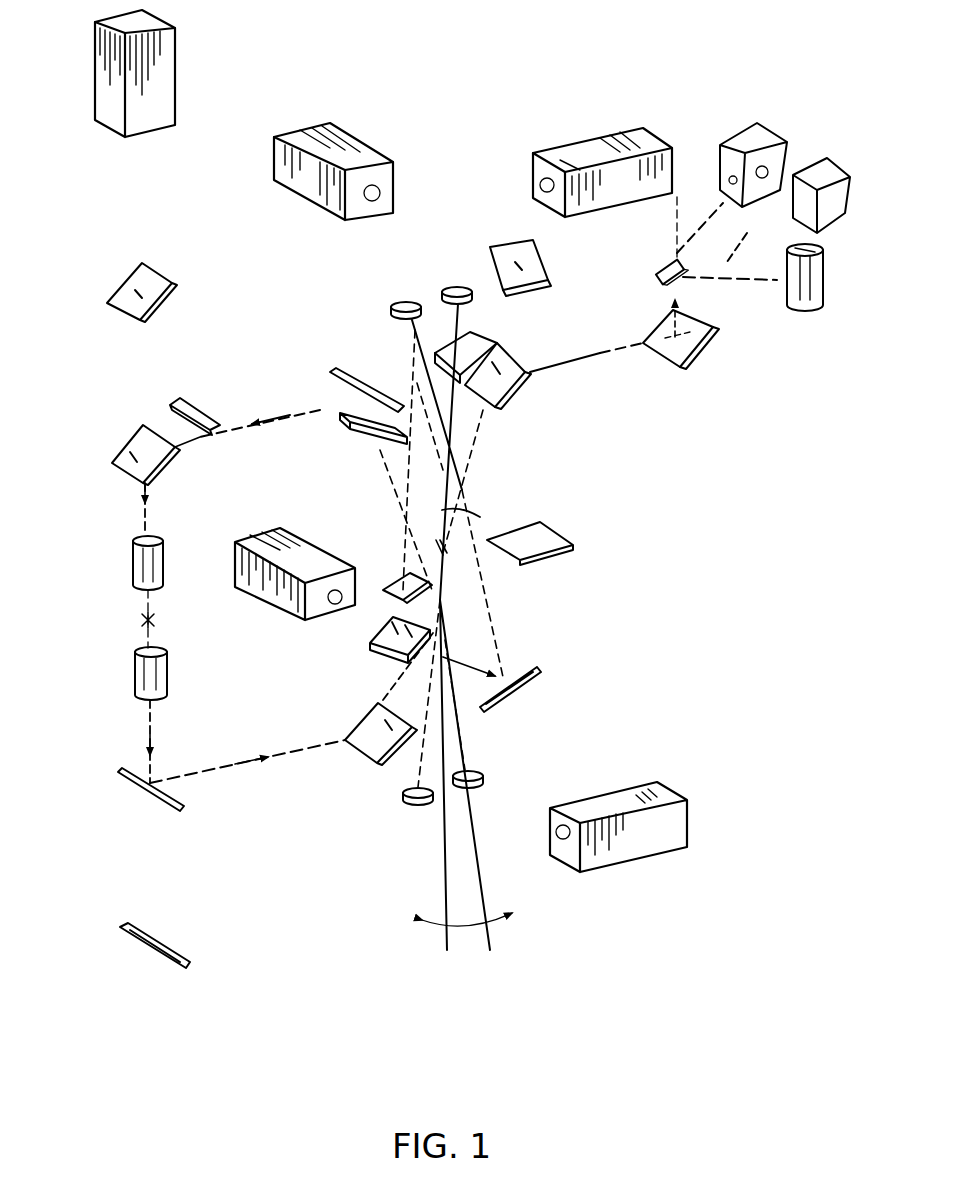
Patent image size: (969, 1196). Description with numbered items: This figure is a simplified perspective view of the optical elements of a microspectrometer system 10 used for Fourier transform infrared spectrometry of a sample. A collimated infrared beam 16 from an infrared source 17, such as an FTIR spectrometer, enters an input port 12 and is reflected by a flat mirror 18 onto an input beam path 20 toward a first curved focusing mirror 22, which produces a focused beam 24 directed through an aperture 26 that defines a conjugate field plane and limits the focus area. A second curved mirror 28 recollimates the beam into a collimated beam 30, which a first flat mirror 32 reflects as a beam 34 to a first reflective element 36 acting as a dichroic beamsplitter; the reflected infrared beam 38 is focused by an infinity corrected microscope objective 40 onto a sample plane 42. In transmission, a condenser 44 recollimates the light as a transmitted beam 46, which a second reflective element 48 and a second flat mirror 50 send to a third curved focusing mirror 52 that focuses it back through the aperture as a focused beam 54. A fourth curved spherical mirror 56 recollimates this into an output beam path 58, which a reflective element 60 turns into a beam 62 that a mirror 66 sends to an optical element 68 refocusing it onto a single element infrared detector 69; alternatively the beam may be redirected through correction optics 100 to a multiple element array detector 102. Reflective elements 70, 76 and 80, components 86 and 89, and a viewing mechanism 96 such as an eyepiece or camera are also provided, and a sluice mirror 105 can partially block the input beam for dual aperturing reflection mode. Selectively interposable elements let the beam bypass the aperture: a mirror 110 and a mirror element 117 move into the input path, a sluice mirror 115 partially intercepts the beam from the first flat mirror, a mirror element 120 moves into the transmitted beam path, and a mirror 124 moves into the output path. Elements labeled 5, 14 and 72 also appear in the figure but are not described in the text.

The optical axis / beam angle 5 is at (447, 943).
The microspectrometer system 10 is at (672, 562).
The input port 12 is at (367, 595).
The beam path 14 is at (727, 238).
The collimated infrared beam 16 is at (362, 627).
The infrared source 17 is at (265, 612).
The flat mirror 18 is at (527, 685).
The input beam path 20 is at (497, 640).
The first curved focusing mirror 22 is at (406, 300).
The focused beam 24 is at (417, 385).
The aperture 26 is at (443, 547).
The second curved mirror 28 is at (477, 792).
The collimated beam 30 is at (380, 460).
The first flat mirror 32 is at (332, 372).
The beam 34 is at (315, 410).
The first reflective element 36 is at (117, 455).
The beam 38 is at (143, 490).
The infinity corrected microscope objective 40 is at (133, 572).
The sample plane 42 is at (140, 622).
The condenser 44 is at (135, 678).
The transmitted beam 46 is at (150, 723).
The second reflective element 48 is at (140, 790).
The second flat mirror 50 is at (362, 760).
The third curved focusing mirror 52 is at (457, 285).
The focused beam 54 is at (445, 510).
The fourth curved spherical mirror 56 is at (415, 807).
The output beam path 58 is at (478, 492).
The reflective element 60 is at (513, 397).
The beam 62 is at (558, 367).
The mirror 66 is at (697, 347).
The optical element 68 is at (667, 267).
The single element infrared detector 69 is at (808, 312).
The reflective element 70 is at (517, 250).
The detector housing 72 is at (627, 847).
The reflective element 76 is at (183, 968).
The reflective element 80 is at (117, 313).
The optical component 86 is at (673, 150).
The optical component 89 is at (293, 130).
The viewing mechanism 96 is at (95, 63).
The correction optics 100 is at (767, 135).
The multiple element array detector 102 is at (845, 173).
The sluice mirror 105 is at (543, 530).
The mirror 110 is at (340, 417).
The sluice mirror 115 is at (190, 410).
The mirror element 117 is at (480, 335).
The mirror element 120 is at (447, 592).
The mirror 124 is at (372, 653).